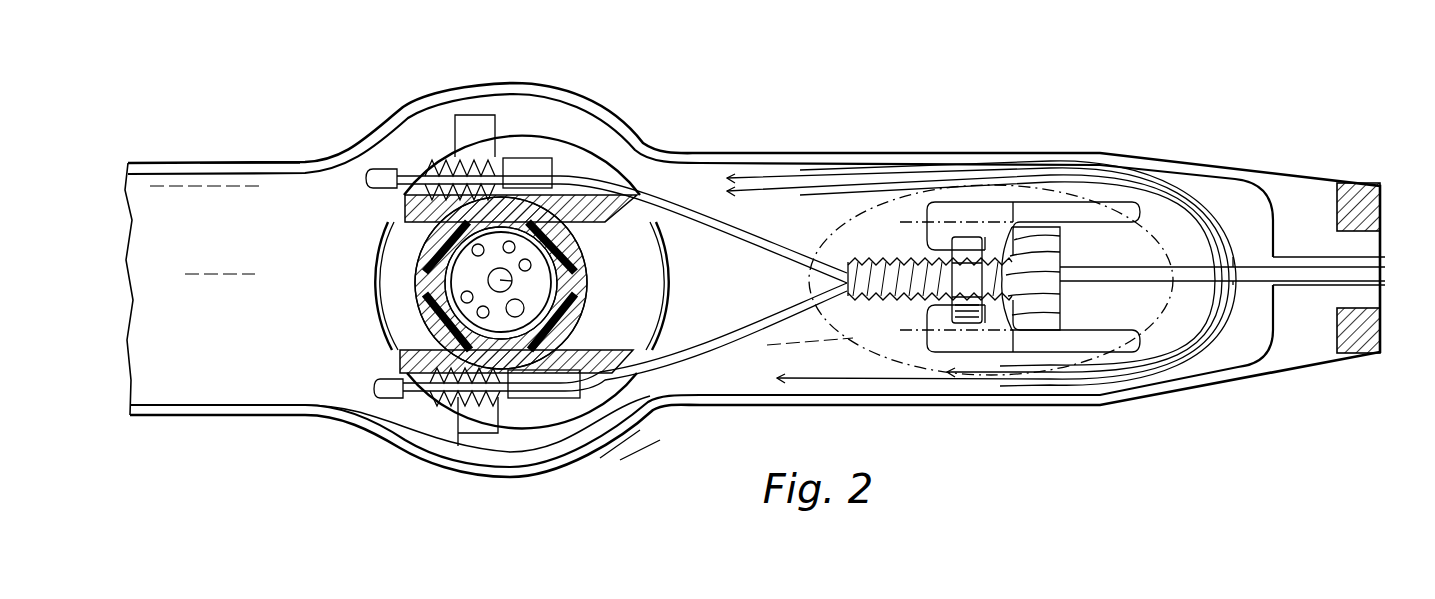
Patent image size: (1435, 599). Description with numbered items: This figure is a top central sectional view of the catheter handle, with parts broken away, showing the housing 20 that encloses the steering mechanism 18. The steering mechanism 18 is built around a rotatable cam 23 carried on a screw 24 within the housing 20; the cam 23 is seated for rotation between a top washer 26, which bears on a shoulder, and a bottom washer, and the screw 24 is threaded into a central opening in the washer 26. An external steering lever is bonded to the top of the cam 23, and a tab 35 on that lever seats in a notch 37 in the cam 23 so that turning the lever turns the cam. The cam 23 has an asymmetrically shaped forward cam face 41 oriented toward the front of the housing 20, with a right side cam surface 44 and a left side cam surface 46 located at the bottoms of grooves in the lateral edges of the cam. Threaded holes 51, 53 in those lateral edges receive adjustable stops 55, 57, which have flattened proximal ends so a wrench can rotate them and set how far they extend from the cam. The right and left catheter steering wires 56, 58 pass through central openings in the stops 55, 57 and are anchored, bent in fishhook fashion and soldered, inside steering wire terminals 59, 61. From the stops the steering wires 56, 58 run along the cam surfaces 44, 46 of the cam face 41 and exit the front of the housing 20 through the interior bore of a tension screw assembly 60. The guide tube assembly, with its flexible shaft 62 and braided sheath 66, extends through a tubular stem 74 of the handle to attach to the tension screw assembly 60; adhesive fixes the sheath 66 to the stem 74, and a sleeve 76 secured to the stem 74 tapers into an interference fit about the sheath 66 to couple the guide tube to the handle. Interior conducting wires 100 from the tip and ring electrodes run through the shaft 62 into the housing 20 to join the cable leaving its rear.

The steering mechanism 18 is at (596, 90).
The housing 20 is at (262, 162).
The rotatable cam 23 is at (392, 238).
The screw 24 is at (586, 265).
The top washer 26 is at (418, 256).
The tab 35 is at (440, 296).
The notch 37 is at (428, 280).
The forward cam face 41 is at (671, 297).
The right side cam surface 44 is at (628, 424).
The left side cam surface 46 is at (650, 207).
The threaded hole 51 is at (548, 158).
The threaded hole 53 is at (548, 398).
The adjustable stop 55 is at (452, 160).
The right catheter steering wire 56 is at (650, 355).
The adjustable stop 57 is at (445, 398).
The left catheter steering wire 58 is at (762, 245).
The steering wire terminal 59 is at (370, 181).
The tension screw assembly 60 is at (1052, 310).
The steering wire terminal 61 is at (375, 386).
The flexible shaft 62 is at (1315, 263).
The braided sheath 66 is at (1370, 266).
The tubular stem 74 is at (1352, 300).
The sleeve 76 is at (1357, 186).
The interior conducting wires 100 is at (1190, 202).